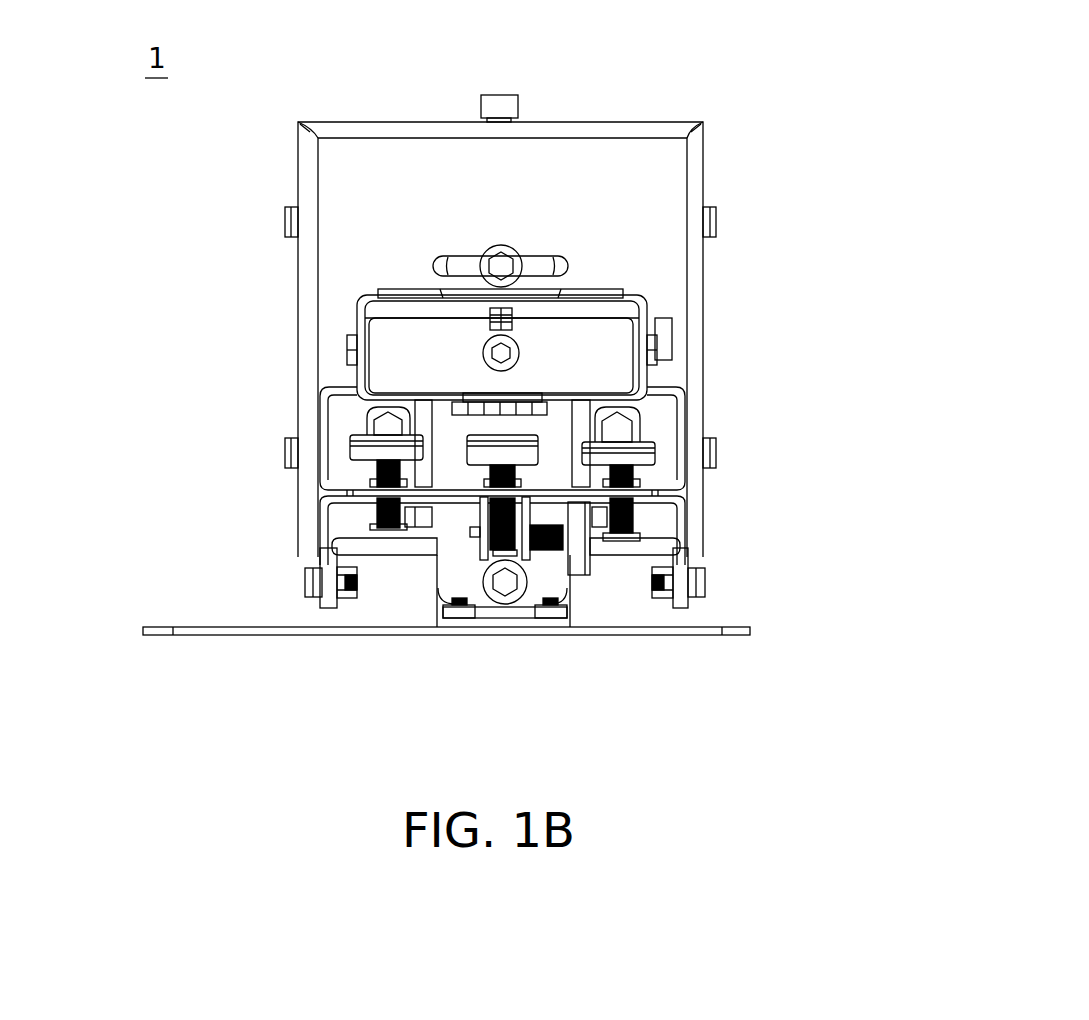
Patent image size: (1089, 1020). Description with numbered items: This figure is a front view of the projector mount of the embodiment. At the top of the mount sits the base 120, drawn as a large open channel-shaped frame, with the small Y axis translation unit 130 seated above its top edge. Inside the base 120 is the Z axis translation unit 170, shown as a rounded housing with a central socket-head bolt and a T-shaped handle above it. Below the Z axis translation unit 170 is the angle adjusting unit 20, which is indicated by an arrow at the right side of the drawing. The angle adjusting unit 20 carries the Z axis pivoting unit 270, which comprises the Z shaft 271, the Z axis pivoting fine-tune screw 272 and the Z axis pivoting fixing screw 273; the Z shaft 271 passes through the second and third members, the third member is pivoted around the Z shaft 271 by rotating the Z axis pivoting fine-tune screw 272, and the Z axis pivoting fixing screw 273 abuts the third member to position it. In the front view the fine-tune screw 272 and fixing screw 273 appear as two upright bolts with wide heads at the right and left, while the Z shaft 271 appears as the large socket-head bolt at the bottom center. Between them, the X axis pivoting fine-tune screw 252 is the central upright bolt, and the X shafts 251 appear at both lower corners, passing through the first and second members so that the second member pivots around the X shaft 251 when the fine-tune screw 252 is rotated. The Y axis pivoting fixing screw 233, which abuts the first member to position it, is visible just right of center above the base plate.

The angle adjusting unit 20 is at (722, 580).
The base 120 is at (638, 167).
The Y axis translation unit 130 is at (513, 107).
The Z axis translation unit 170 is at (517, 351).
The Y axis pivoting fixing screw 233 is at (580, 552).
The X shaft 251 is at (312, 588).
The X axis pivoting fine-tune screw 252 is at (480, 453).
The Z axis pivoting unit 270 is at (1013, 570).
The Z shaft 271 is at (505, 583).
The Z axis pivoting fine-tune screw 272 is at (642, 457).
The Z axis pivoting fixing screw 273 is at (365, 448).